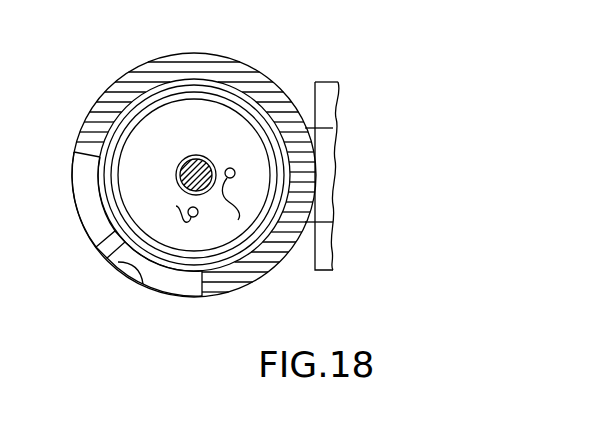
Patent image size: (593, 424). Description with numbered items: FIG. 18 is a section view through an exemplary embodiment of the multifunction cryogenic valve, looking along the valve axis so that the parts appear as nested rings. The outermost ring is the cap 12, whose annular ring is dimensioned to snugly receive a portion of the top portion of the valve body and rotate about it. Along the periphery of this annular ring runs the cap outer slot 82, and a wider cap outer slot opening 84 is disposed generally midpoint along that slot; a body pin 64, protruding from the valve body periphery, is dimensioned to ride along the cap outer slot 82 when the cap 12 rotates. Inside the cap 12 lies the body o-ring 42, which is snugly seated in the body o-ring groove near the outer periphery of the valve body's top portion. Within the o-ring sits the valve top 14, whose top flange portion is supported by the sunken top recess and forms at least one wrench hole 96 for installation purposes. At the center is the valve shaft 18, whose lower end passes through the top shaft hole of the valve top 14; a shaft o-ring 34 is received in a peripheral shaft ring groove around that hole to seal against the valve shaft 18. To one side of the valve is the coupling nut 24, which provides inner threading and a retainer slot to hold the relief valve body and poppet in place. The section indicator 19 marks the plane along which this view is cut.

The cap 12 is at (256, 272).
The valve top 14 is at (128, 179).
The valve shaft 18 is at (200, 156).
The section line 19 is at (288, 78).
The coupling nut 24 is at (327, 94).
The shaft o-ring 34 is at (178, 166).
The body o-ring 42 is at (131, 113).
The body pin 64 is at (107, 253).
The cap outer slot 82 is at (82, 205).
The cap outer slot opening 84 is at (127, 268).
The wrench hole 96 is at (194, 202).